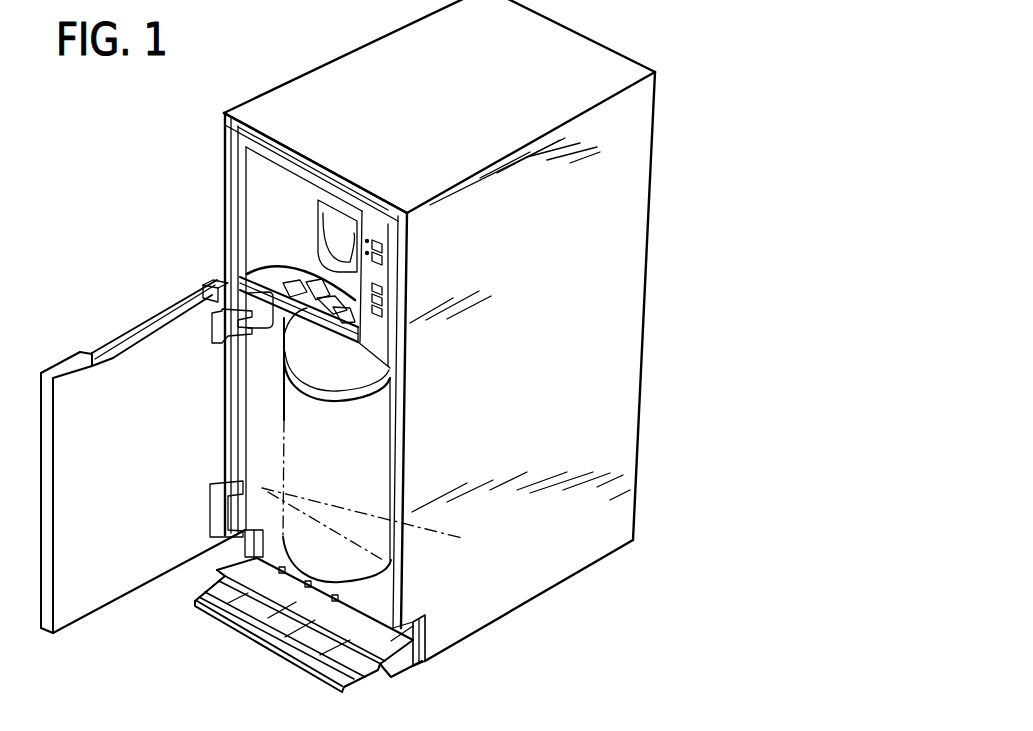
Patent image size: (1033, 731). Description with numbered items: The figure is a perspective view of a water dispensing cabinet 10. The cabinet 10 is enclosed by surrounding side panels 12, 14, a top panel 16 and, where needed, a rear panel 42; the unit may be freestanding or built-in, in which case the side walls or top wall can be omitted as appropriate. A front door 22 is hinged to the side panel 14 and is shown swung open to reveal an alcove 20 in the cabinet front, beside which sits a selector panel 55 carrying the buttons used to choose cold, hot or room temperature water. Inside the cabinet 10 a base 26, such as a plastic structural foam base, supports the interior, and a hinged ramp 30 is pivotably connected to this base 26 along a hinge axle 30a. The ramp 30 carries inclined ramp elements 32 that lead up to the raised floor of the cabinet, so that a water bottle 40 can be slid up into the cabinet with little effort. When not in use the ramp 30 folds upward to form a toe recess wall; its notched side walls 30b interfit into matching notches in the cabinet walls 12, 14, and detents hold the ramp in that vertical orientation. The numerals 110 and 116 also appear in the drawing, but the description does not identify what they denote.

The water dispensing cabinet 10 is at (656, 273).
The side panel 12 is at (632, 182).
The side panel 14 is at (307, 70).
The top panel 16 is at (552, 53).
The alcove 20 is at (260, 222).
The front door 22 is at (148, 328).
The base 26 is at (268, 632).
The hinged ramp 30 is at (308, 668).
The hinge axle 30a is at (195, 607).
The notched side walls 30b is at (378, 673).
The inclined ramp elements 32 is at (427, 661).
The water bottle 40 is at (376, 445).
The rear panel 42 is at (650, 229).
The selector panel 55 is at (380, 275).
The conduit 110 is at (393, 729).
The tube 116 is at (450, 713).